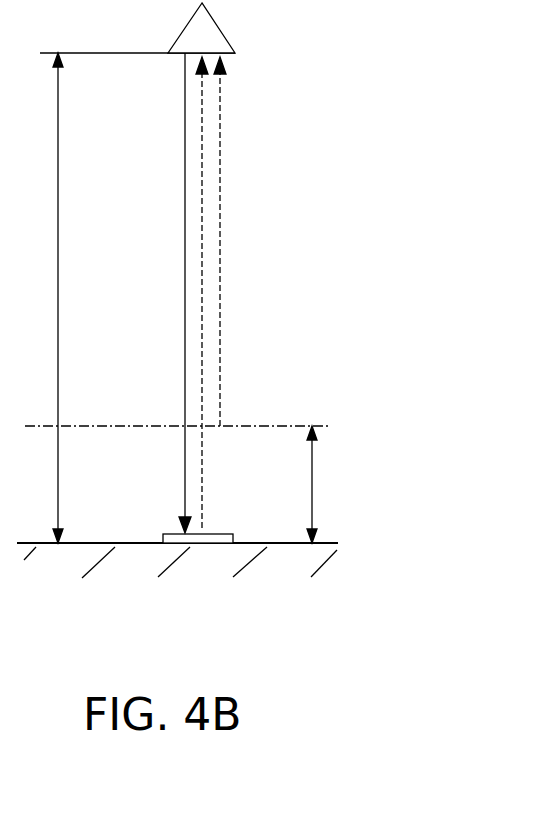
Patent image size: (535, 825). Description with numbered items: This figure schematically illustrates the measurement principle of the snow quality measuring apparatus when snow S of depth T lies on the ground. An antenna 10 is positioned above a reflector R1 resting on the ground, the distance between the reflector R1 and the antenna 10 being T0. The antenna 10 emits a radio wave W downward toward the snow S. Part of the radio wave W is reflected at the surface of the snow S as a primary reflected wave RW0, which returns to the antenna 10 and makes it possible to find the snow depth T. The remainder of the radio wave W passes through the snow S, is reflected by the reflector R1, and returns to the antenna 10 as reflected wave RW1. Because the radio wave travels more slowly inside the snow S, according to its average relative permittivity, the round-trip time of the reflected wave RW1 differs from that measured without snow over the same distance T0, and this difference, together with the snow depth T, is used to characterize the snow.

The antenna 10 is at (228, 36).
The radio wave W is at (184, 252).
The reflected wave RW1 is at (202, 210).
The primary reflected wave RW0 is at (220, 300).
The reflector R1 is at (217, 533).
The snow S is at (293, 425).
The distance T0 is at (32, 298).
The snow depth T is at (349, 503).